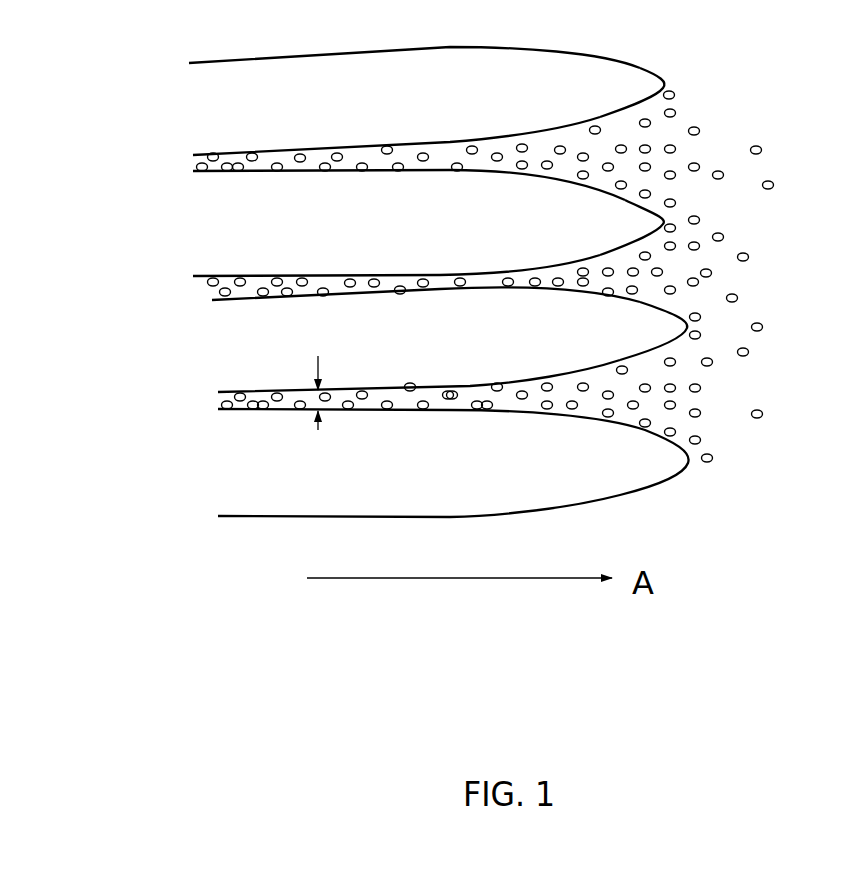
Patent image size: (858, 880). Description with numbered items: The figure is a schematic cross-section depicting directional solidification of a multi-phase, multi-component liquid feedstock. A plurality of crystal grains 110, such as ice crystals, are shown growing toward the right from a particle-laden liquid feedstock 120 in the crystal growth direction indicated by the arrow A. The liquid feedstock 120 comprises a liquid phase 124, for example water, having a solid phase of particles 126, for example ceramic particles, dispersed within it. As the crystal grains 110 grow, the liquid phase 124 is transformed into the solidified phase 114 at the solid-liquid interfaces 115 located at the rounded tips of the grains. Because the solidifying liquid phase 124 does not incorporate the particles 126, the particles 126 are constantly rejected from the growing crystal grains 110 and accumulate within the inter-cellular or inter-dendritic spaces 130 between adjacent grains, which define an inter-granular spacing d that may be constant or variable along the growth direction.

The crystal grains 110 is at (488, 274).
The solidified phase 114 is at (590, 86).
The solid-liquid interfaces 115 is at (646, 296).
The liquid feedstock 120 is at (714, 276).
The liquid phase 124 is at (604, 145).
The solid phase particles 126 is at (694, 389).
The inter-cellular or inter-dendritic spaces 130 is at (178, 170).